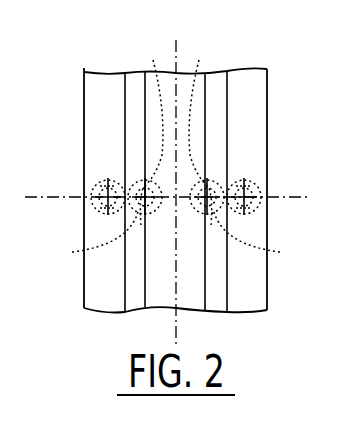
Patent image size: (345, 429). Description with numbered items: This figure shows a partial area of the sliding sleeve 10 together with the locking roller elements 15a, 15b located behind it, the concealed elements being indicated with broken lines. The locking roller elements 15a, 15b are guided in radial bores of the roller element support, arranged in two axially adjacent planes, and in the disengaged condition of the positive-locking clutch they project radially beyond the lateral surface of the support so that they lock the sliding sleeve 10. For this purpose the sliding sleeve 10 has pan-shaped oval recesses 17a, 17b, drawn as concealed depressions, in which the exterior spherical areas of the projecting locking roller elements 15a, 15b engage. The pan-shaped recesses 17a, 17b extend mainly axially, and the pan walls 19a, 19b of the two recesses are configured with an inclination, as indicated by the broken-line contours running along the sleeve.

The sliding sleeve 10 is at (227, 141).
The locking roller element 15a is at (90, 239).
The locking roller element 15b is at (264, 238).
The pan-shaped oval recess 17a is at (90, 179).
The pan-shaped oval recess 17b is at (262, 174).
The pan wall 19a is at (56, 221).
The pan wall 19b is at (298, 221).